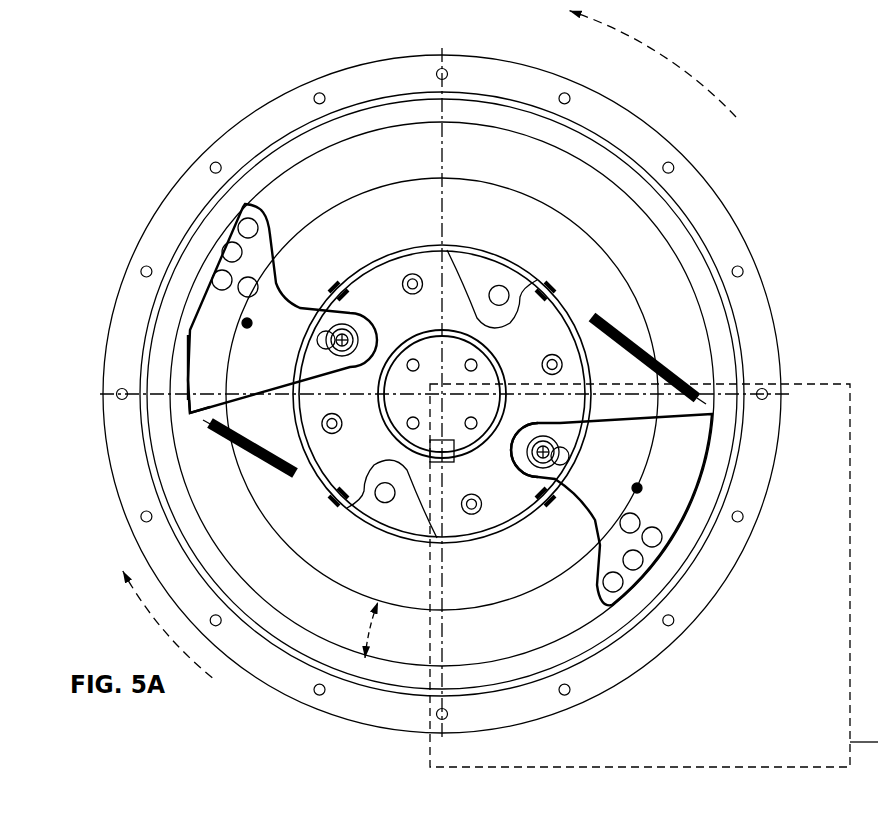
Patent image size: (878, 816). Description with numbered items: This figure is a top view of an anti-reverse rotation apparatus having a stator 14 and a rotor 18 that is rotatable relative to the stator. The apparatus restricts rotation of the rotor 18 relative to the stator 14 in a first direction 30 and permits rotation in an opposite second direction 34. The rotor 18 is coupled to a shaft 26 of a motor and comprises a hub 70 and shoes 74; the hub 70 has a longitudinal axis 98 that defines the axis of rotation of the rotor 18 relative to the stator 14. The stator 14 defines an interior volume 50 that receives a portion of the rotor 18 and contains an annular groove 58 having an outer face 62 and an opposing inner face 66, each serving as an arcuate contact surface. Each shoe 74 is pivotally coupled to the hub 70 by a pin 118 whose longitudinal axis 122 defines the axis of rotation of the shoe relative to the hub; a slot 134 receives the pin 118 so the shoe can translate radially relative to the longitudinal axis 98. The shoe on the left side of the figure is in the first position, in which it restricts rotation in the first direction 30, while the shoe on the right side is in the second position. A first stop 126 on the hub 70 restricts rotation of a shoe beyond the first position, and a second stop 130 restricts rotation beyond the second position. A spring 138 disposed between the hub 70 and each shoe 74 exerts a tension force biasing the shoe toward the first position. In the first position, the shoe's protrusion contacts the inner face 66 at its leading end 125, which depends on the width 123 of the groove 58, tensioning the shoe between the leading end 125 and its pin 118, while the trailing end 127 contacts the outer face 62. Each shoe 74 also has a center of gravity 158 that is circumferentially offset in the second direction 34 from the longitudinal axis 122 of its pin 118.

The stator 14 is at (409, 76).
The rotor 18 is at (183, 359).
The shaft 26 is at (457, 357).
The first direction 30 is at (152, 618).
The second direction 34 is at (668, 58).
The interior volume 50 is at (563, 163).
The annular groove 58 is at (607, 203).
The outer face 62 is at (692, 275).
The inner face 66 is at (618, 273).
The hub 70 is at (408, 268).
The shoes 74 is at (627, 597).
The longitudinal axis 98 is at (442, 394).
The pin 118 is at (335, 337).
The longitudinal axis of pin 122 is at (548, 452).
The width of groove 123 is at (368, 632).
The leading end 125 is at (182, 412).
The first stop 126 is at (523, 470).
The trailing end 127 is at (238, 204).
The second stop 130 is at (545, 458).
The slot 134 is at (325, 342).
The spring 138 is at (273, 470).
The center of gravity 158 is at (245, 323).